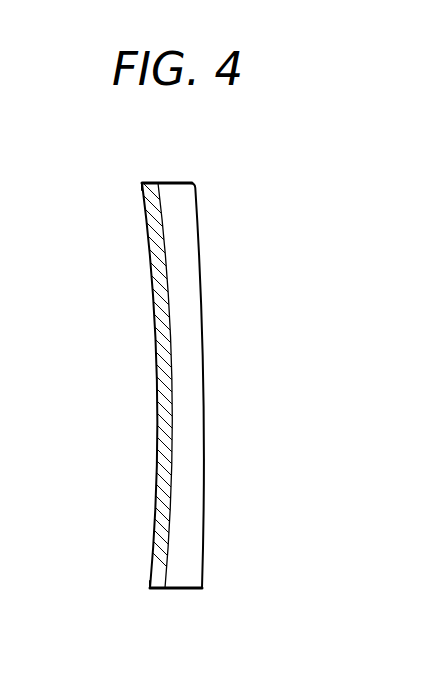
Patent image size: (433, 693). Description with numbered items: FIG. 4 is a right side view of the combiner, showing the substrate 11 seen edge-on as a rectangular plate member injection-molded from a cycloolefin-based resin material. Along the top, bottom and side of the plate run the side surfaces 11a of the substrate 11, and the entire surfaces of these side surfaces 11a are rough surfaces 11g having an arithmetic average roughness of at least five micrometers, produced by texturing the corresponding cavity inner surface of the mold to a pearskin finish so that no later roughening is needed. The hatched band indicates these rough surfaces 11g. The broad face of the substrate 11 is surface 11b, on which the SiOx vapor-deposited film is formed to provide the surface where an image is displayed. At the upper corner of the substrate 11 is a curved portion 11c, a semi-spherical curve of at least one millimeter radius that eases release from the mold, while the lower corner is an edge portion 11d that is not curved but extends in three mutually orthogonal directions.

The substrate 11 is at (237, 246).
The side surfaces 11a is at (166, 183).
The surface 11b is at (150, 275).
The curved portion 11c is at (141, 184).
The edge portion 11d is at (150, 588).
The rough surfaces 11g is at (160, 392).